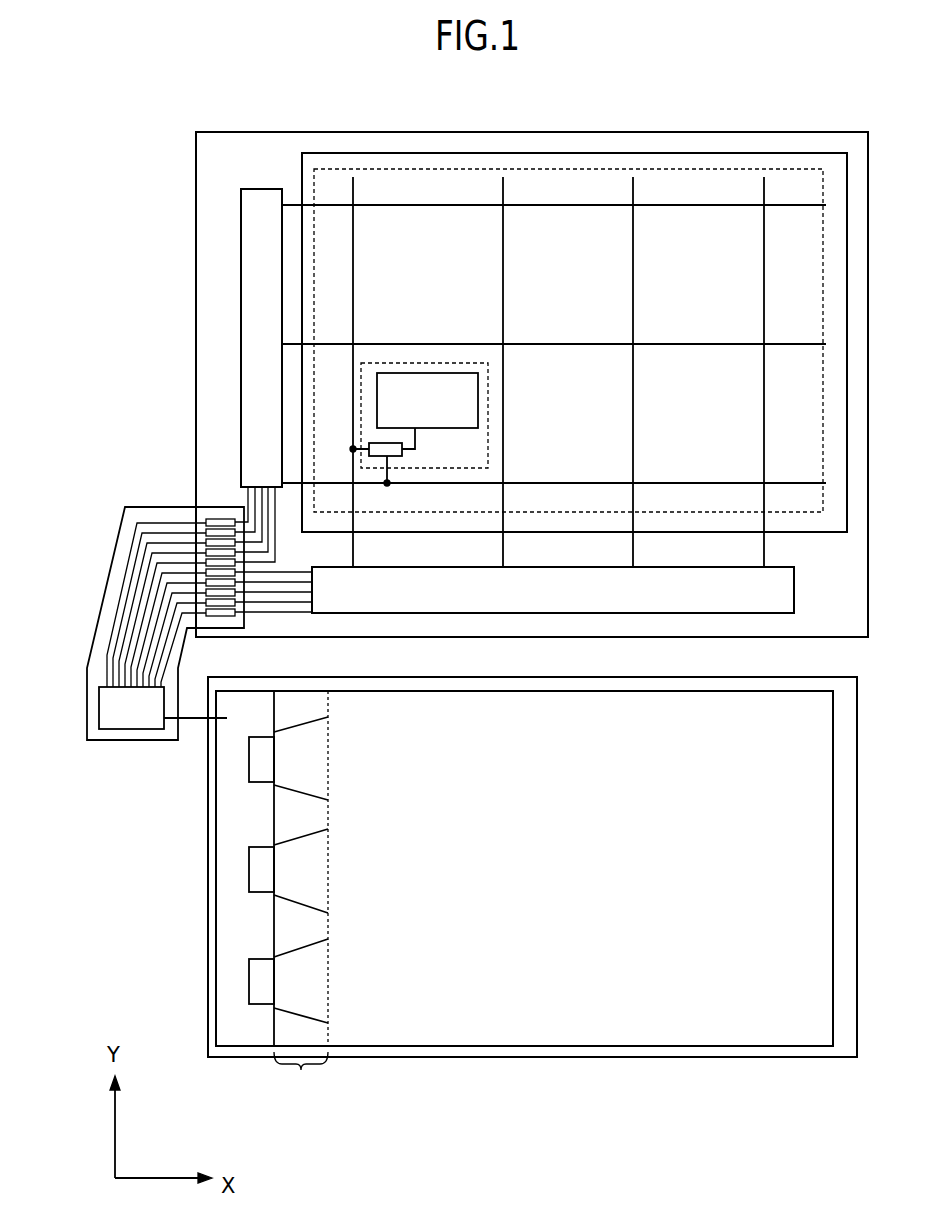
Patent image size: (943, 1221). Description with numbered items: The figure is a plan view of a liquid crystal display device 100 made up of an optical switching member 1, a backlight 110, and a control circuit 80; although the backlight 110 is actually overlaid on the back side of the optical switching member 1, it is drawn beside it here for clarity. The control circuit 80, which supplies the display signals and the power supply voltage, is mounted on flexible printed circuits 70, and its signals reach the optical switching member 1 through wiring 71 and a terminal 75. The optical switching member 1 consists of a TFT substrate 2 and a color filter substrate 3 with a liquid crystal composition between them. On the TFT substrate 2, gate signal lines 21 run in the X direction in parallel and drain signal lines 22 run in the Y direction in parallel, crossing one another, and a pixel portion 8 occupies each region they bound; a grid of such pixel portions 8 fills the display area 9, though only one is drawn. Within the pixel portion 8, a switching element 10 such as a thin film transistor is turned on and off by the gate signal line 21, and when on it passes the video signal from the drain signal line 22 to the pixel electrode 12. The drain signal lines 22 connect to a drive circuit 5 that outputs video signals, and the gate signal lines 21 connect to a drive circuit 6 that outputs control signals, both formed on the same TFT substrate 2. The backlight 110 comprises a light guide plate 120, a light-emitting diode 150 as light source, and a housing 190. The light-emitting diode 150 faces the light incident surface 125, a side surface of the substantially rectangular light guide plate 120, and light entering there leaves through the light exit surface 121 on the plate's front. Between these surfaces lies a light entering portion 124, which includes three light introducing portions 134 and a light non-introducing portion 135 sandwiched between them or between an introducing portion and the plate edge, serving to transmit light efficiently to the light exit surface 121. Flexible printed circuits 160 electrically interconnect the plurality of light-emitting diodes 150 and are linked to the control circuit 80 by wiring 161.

The optical switching member 1 is at (477, 432).
The TFT substrate 2 is at (312, 140).
The color filter substrate 3 is at (391, 153).
The drive circuit 5 is at (765, 613).
The drive circuit 6 is at (257, 189).
The pixel portion 8 is at (450, 399).
The display area 9 is at (680, 178).
The switching element 10 is at (403, 455).
The pixel electrode 12 is at (438, 403).
The gate signal line 21 is at (553, 342).
The drain signal line 22 is at (353, 290).
The flexible printed circuits 70 is at (165, 612).
The wiring 71 is at (133, 507).
The terminal 75 is at (220, 520).
The control circuit 80 is at (121, 715).
The liquid crystal display device 100 is at (488, 928).
The backlight 110 is at (524, 912).
The light guide plate 120 is at (773, 1046).
The light exit surface 121 is at (684, 960).
The light entering portion 124 is at (301, 1078).
The light incident surface 125 is at (274, 862).
The light introducing portion 134 is at (313, 982).
The light non-introducing portion 135 is at (302, 925).
The light-emitting diode 150 is at (250, 980).
The flexible printed circuits 160 is at (229, 833).
The wiring 161 is at (195, 718).
The housing 190 is at (463, 1046).